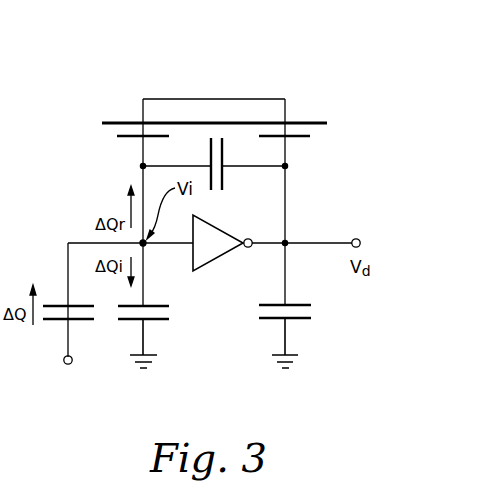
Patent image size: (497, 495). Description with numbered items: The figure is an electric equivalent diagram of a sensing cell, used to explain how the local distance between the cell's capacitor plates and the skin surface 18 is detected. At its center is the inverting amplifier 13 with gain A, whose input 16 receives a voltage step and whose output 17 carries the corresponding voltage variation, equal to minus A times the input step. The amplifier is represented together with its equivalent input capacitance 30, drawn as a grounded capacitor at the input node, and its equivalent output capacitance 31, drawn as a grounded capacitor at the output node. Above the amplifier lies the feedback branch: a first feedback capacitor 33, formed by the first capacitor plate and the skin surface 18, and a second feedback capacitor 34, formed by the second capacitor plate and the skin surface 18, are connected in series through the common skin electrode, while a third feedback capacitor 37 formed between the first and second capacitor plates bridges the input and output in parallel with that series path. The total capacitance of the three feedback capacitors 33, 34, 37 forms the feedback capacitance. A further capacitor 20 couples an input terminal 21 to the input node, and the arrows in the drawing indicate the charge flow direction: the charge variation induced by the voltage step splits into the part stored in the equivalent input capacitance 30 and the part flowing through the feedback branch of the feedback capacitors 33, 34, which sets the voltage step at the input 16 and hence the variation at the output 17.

The inverting amplifier 13 is at (220, 230).
The input 16 is at (146, 247).
The output 17 is at (340, 243).
The skin surface 18 is at (240, 123).
The input capacitor 20 is at (82, 322).
The input terminal 21 is at (64, 363).
The equivalent input capacitance 30 is at (160, 322).
The equivalent output capacitance 31 is at (300, 320).
The first feedback capacitor 33 is at (307, 123).
The second feedback capacitor 34 is at (118, 123).
The third feedback capacitor 37 is at (212, 139).